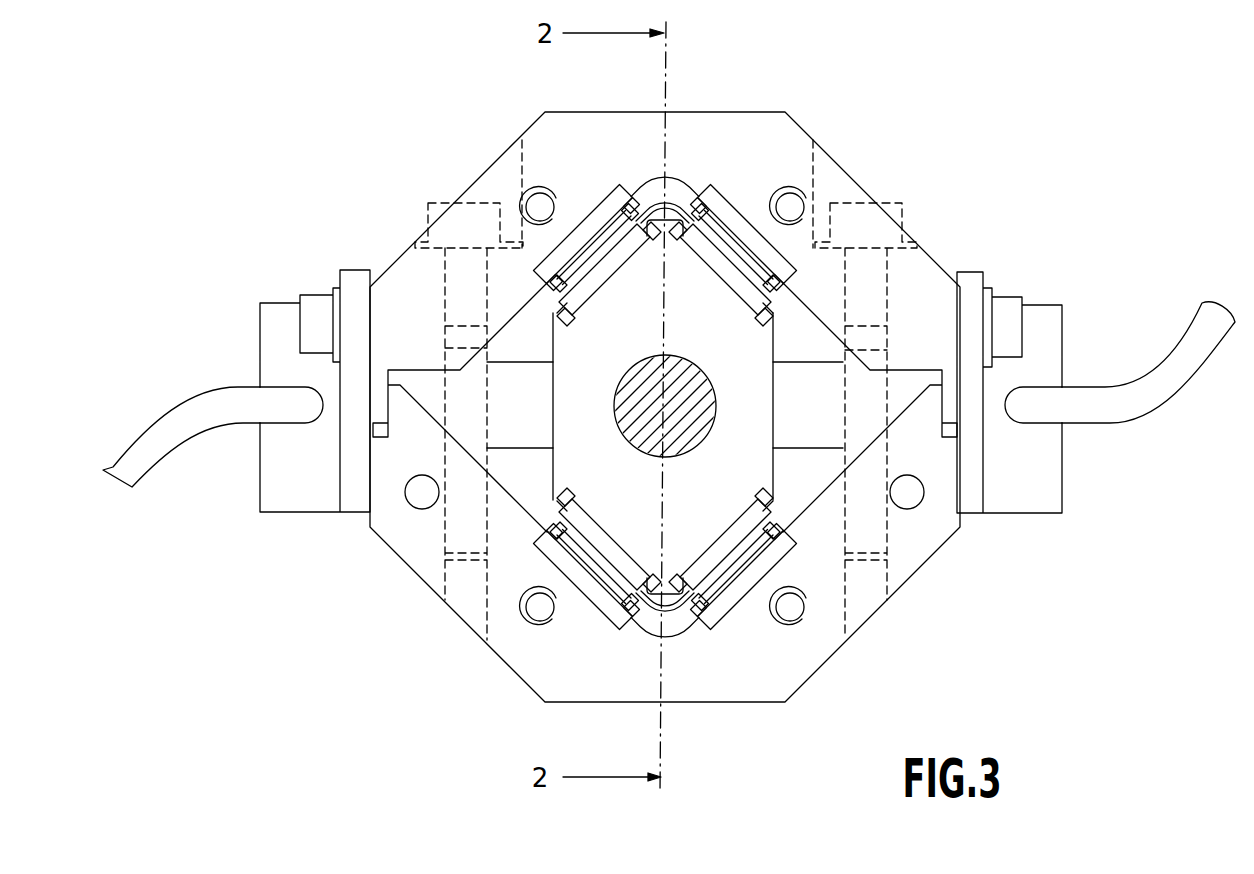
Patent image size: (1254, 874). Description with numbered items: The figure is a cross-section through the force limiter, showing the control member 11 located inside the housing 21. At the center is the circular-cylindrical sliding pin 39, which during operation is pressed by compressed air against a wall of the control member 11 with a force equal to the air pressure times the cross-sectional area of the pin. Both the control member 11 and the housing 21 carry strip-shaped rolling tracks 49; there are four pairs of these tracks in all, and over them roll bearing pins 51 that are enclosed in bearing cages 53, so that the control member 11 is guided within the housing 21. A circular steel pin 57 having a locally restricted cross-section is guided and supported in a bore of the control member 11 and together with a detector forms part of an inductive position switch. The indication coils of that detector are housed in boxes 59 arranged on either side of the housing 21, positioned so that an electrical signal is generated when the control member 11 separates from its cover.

The control member 11 is at (570, 465).
The housing 21 is at (719, 132).
The sliding pin 39 is at (687, 430).
The rolling tracks 49 is at (592, 218).
The bearing pins 51 is at (715, 278).
The bearing cages 53 is at (660, 205).
The steel pin 57 is at (523, 380).
The boxes 59 is at (305, 497).